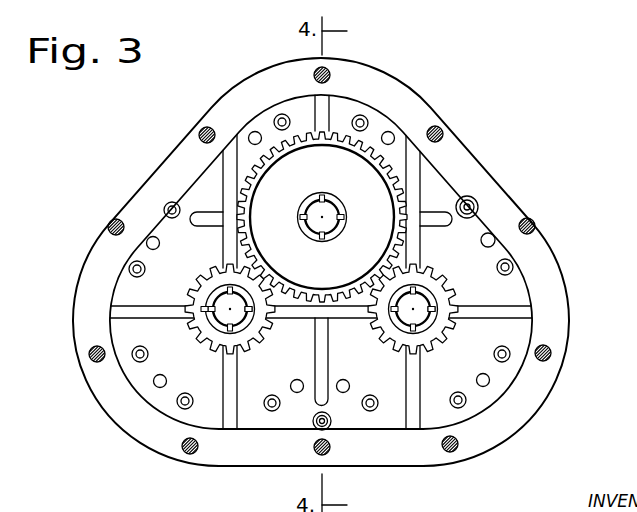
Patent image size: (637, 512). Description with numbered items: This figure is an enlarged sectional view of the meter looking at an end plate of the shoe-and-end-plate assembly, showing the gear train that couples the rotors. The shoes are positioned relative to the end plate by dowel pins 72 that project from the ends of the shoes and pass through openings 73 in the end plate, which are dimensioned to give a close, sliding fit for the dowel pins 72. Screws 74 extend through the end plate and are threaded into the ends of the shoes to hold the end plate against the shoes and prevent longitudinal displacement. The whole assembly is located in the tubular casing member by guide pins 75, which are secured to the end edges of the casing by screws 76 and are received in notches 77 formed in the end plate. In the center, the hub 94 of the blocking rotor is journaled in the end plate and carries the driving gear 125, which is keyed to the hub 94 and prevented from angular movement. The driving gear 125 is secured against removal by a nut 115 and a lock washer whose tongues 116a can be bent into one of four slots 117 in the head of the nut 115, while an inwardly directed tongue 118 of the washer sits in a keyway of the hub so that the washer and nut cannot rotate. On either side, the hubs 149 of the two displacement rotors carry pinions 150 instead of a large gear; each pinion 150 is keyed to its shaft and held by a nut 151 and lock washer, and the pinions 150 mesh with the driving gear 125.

The dowel pins 72 is at (480, 240).
The openings 73 is at (350, 262).
The screws 74 is at (515, 268).
The guide pins 75 is at (478, 204).
The screws 76 is at (480, 207).
The notches 77 is at (470, 197).
The hub portion 94 is at (319, 214).
The nut 115 is at (337, 234).
The tongues 116a is at (345, 215).
The slots 117 is at (303, 220).
The inwardly directed tongue 118 is at (322, 193).
The driving gear 125 is at (340, 128).
The hubs 149 is at (226, 318).
The pinions 150 is at (202, 290).
The nut 151 is at (428, 322).